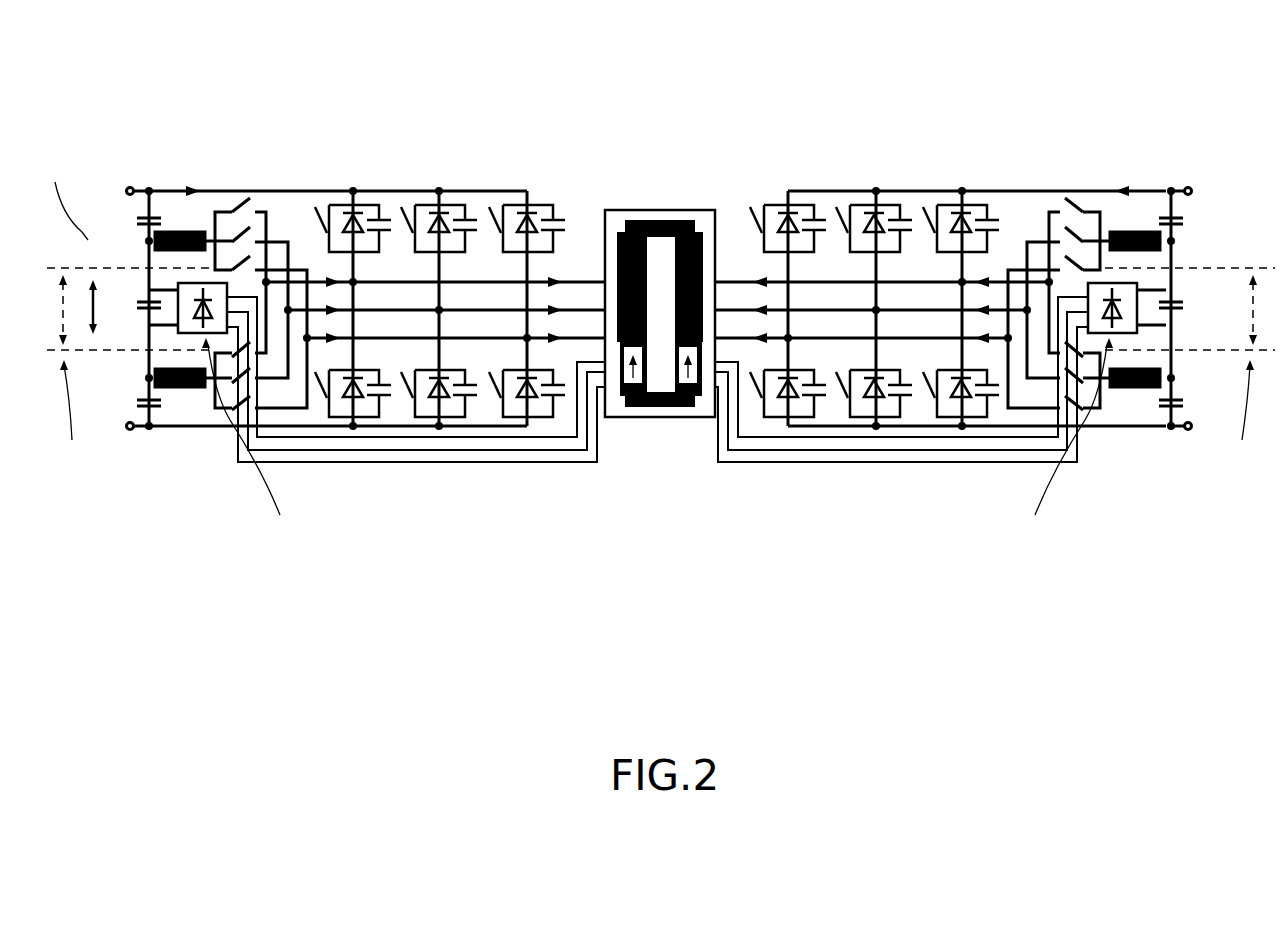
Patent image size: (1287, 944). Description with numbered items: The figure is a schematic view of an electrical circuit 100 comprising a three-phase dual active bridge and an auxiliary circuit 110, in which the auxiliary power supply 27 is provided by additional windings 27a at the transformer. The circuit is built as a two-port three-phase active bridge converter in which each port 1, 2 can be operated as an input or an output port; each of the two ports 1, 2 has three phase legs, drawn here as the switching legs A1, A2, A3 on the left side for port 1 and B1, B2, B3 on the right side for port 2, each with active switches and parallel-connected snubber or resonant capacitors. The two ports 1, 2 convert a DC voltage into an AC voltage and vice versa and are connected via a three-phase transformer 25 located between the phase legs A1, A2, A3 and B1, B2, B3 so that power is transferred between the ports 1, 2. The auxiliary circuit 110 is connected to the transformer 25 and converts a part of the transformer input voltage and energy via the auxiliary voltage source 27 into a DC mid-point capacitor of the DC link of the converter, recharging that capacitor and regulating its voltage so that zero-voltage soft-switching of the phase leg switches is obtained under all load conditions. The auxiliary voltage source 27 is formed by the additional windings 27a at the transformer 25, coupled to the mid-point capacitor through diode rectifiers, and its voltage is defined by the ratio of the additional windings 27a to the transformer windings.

The electrical circuit 100 is at (114, 76).
The port 1 is at (171, 80).
The port 2 is at (772, 80).
The three-phase transformer 25 is at (650, 198).
The auxiliary voltage source 27 is at (640, 410).
The additional windings 27a is at (674, 410).
The auxiliary circuit 110 is at (443, 478).
The switching cell of first converter A1 is at (353, 280).
The switching cell of first converter A2 is at (439, 280).
The switching cell of first converter A3 is at (527, 280).
The switching cell of second converter B1 is at (788, 280).
The switching cell of second converter B2 is at (874, 280).
The switching cell of second converter B3 is at (961, 280).